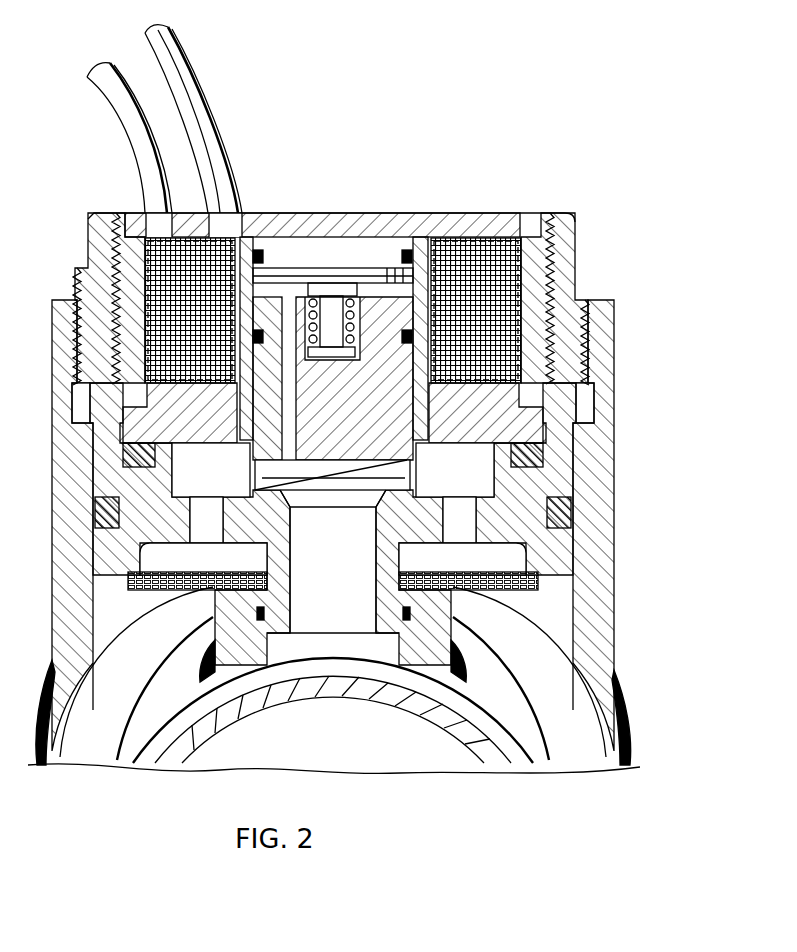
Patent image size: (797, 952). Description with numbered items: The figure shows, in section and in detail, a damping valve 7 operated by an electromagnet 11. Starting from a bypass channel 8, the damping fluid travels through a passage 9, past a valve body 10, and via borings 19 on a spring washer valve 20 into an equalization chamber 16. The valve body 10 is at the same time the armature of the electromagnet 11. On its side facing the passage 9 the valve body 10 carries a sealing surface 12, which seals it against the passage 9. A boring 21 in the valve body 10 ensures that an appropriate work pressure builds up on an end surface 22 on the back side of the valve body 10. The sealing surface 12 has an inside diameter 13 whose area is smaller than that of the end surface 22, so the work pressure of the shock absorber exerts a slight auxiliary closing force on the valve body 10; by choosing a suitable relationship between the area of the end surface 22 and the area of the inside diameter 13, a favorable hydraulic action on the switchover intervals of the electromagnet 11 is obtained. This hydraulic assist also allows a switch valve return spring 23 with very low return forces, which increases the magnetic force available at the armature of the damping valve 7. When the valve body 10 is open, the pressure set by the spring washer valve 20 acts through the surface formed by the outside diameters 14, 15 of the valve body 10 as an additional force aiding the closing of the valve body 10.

The damping valve 7 is at (618, 370).
The bypass channel 8 is at (503, 743).
The passage 9 is at (340, 566).
The valve body 10 is at (370, 385).
The electromagnet 11 is at (485, 270).
The sealing surface 12 is at (417, 481).
The inside diameter 13 is at (500, 437).
The outside diameter 14 is at (255, 459).
The outside diameter 15 is at (360, 463).
The equalization chamber 16 is at (497, 662).
The borings 19 is at (463, 525).
The spring washer valve 20 is at (535, 583).
The boring 21 is at (287, 431).
The end surface 22 is at (233, 282).
The switch valve return spring 23 is at (363, 290).